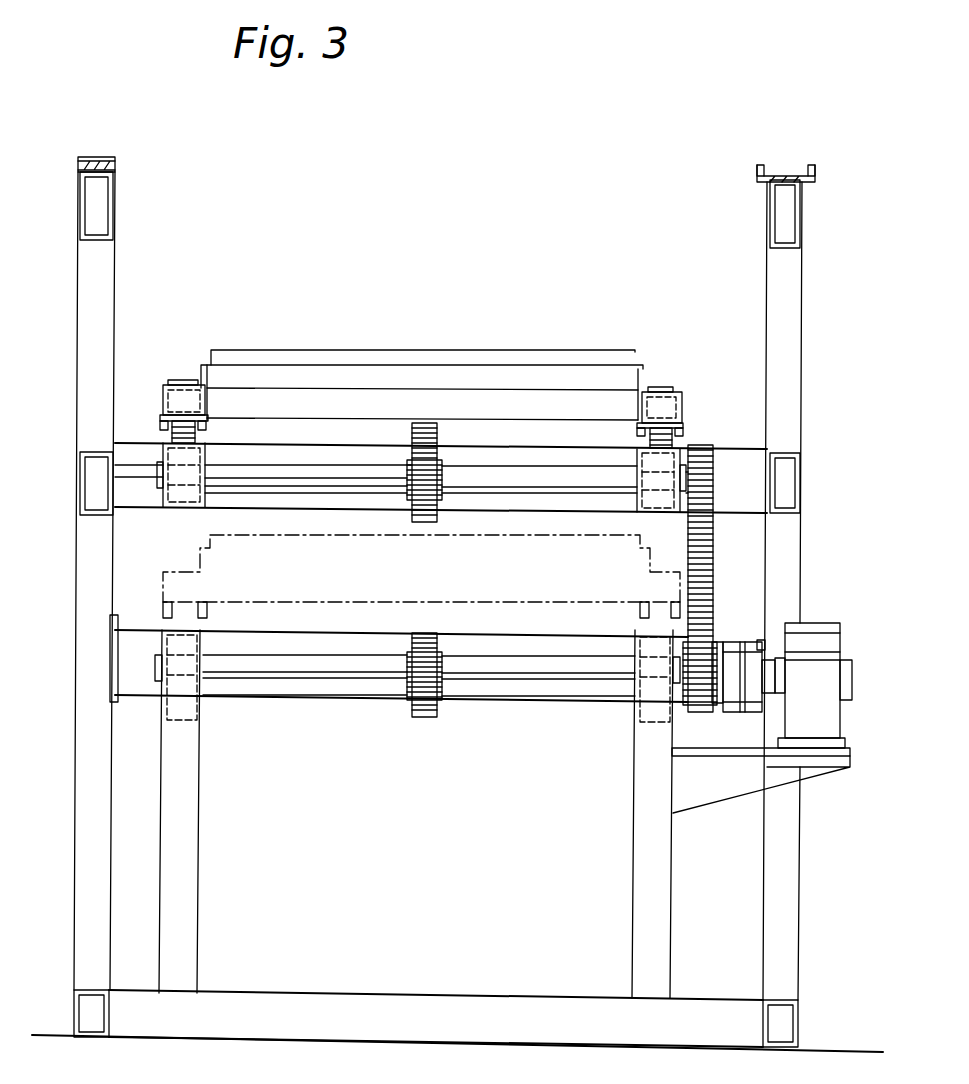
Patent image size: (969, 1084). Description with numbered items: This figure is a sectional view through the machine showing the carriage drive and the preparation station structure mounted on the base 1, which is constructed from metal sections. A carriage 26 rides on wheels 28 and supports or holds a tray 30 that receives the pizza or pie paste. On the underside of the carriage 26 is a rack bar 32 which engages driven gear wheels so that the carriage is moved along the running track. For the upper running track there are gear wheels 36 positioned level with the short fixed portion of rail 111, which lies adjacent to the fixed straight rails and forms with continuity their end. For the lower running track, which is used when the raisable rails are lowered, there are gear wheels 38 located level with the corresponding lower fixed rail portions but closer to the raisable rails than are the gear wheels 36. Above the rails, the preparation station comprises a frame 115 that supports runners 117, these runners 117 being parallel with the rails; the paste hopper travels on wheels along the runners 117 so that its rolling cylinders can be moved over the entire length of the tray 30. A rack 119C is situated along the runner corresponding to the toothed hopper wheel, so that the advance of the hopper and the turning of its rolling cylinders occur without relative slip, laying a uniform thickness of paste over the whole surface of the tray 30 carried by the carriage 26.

The base 1 is at (822, 543).
The carriage 26 is at (346, 378).
The wheels 28 is at (178, 385).
The tray 30 is at (273, 357).
The rack bar 32 is at (420, 427).
The gear wheels 36 is at (412, 514).
The gear wheels 38 is at (410, 716).
The fixed portion of rail 111 is at (638, 447).
The frame 115 is at (790, 324).
The runners 117 is at (783, 176).
The rack 119C is at (97, 158).